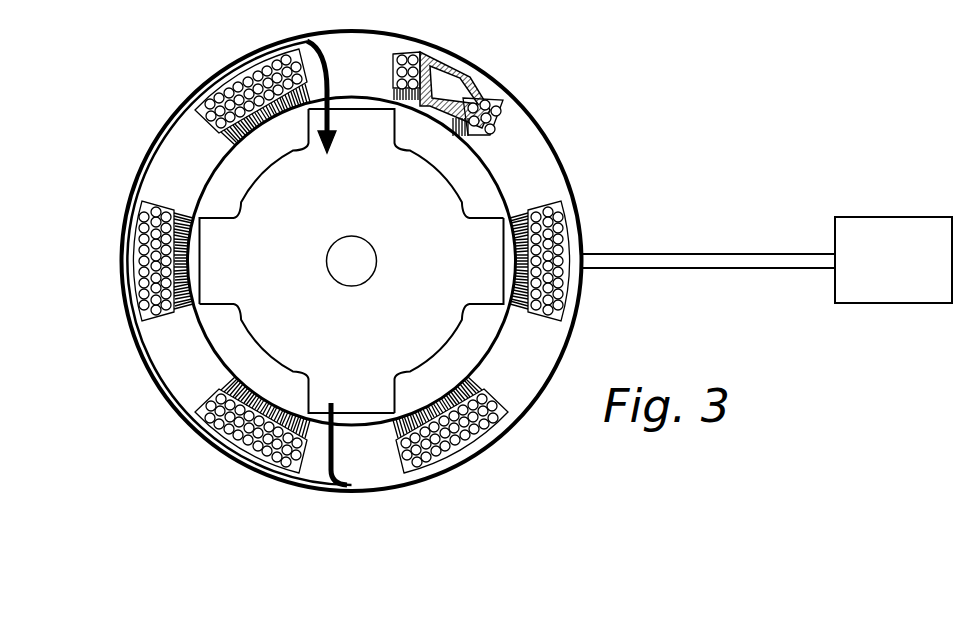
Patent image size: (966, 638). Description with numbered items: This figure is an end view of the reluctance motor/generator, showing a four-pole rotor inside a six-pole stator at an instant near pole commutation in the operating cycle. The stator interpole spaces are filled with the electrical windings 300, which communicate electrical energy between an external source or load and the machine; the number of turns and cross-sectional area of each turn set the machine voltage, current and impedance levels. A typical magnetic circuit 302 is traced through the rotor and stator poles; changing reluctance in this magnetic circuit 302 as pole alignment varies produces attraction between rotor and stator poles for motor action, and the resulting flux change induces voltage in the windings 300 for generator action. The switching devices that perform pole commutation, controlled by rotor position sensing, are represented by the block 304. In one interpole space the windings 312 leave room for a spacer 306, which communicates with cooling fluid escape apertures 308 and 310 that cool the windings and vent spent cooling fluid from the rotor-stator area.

The electrical windings 300 is at (410, 478).
The magnetic circuit 302 is at (345, 466).
The block (pole commutation switching apparatus) 304 is at (890, 216).
The spacer 306 is at (495, 125).
The cooling fluid escape aperture 308 is at (507, 97).
The cooling fluid escape aperture 310 is at (428, 122).
The windings (with spacer) 312 is at (405, 30).